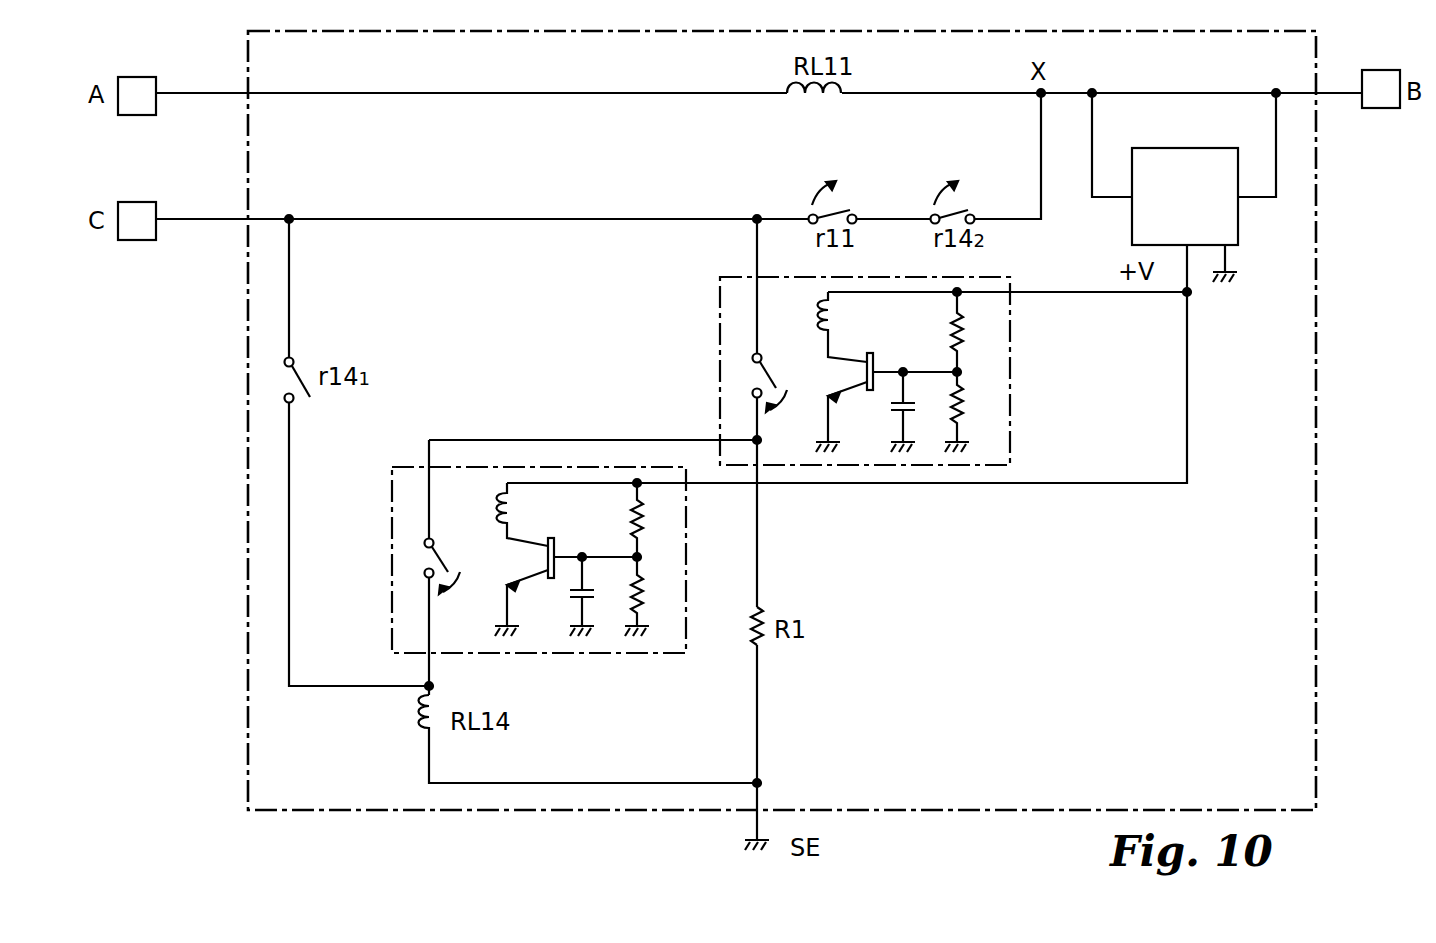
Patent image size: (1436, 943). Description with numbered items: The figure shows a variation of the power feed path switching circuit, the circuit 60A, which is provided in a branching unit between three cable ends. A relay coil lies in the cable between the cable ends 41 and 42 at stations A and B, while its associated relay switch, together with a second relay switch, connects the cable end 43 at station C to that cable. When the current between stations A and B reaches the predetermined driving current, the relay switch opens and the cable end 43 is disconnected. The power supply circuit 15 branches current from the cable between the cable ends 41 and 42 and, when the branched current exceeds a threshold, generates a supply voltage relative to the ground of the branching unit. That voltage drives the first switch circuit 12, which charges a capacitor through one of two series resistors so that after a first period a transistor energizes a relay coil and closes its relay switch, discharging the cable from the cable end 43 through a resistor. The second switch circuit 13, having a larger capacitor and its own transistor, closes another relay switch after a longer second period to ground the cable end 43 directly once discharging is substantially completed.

The cable end 41 is at (137, 77).
The cable end 42 is at (1370, 70).
The cable end 43 is at (137, 202).
The first switch circuit 12 is at (718, 294).
The second switch circuit 13 is at (392, 520).
The power supply circuit 15 is at (1132, 222).
The power feed path switching circuit 60A is at (1316, 298).